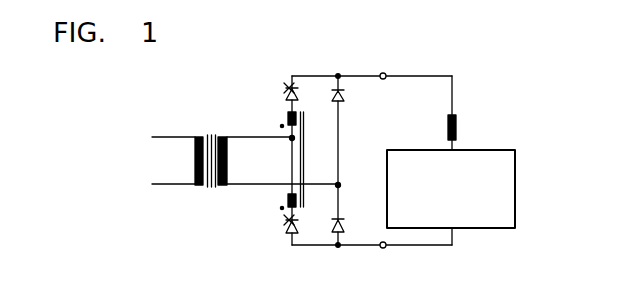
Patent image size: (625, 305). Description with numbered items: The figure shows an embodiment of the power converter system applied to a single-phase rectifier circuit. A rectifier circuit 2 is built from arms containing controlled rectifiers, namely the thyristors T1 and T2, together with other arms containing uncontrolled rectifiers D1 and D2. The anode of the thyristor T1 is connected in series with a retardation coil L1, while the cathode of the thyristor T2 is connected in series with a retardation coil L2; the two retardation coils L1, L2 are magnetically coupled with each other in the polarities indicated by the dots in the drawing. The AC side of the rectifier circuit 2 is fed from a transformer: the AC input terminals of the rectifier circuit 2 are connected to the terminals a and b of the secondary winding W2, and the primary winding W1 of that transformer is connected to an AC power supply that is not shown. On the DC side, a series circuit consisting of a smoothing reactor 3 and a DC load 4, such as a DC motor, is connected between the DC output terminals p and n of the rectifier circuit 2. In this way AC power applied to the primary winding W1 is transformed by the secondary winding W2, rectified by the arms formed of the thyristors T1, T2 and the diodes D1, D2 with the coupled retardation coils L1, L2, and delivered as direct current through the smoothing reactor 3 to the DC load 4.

The rectifier circuit 2 is at (336, 56).
The smoothing reactor 3 is at (457, 126).
The DC load 4 is at (516, 170).
The primary winding W1 is at (198, 137).
The secondary winding W2 is at (224, 137).
The retardation coil L1 is at (288, 113).
The retardation coil L2 is at (287, 198).
The thyristor T1 is at (284, 91).
The thyristor T2 is at (285, 226).
The uncontrolled rectifier D1 is at (343, 97).
The uncontrolled rectifier D2 is at (344, 223).
The terminal a is at (291, 140).
The terminal b is at (340, 184).
The DC output terminal p is at (383, 73).
The DC output terminal n is at (383, 248).